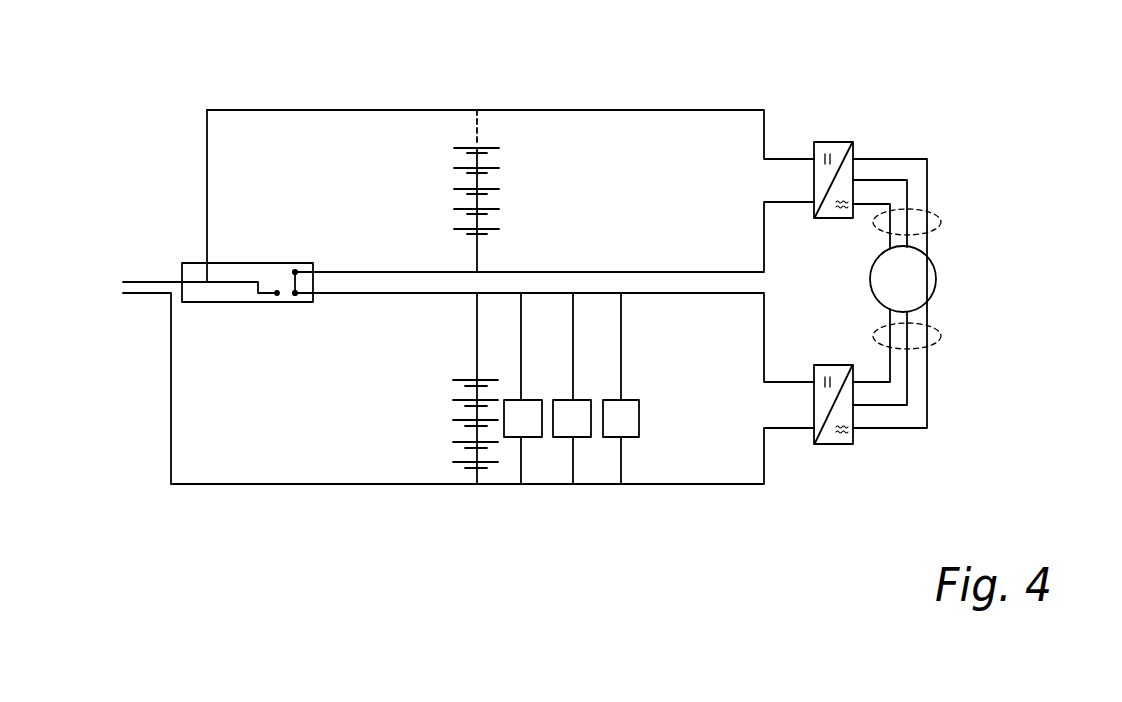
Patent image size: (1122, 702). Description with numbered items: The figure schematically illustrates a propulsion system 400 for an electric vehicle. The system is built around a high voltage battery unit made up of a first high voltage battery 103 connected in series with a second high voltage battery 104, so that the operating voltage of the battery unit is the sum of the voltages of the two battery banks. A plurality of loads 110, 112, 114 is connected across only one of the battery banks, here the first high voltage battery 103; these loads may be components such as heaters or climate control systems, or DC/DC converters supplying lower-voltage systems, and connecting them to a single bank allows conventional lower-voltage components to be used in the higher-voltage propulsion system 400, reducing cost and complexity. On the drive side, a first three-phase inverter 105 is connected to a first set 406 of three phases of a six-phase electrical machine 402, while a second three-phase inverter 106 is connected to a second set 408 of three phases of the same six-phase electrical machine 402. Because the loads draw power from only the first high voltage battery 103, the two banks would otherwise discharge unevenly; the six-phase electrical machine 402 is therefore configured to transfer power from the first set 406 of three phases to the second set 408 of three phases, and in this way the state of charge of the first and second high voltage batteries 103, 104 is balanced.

The propulsion system 400 is at (935, 72).
The first high voltage battery 103 is at (471, 424).
The second high voltage battery 104 is at (478, 195).
The first three-phase inverter 105 is at (818, 141).
The second three-phase inverter 106 is at (822, 446).
The load 110 is at (533, 399).
The load 112 is at (585, 399).
The load 114 is at (635, 399).
The six-phase electrical machine 402 is at (938, 270).
The first set of three phases 406 is at (940, 212).
The second set of three phases 408 is at (940, 326).